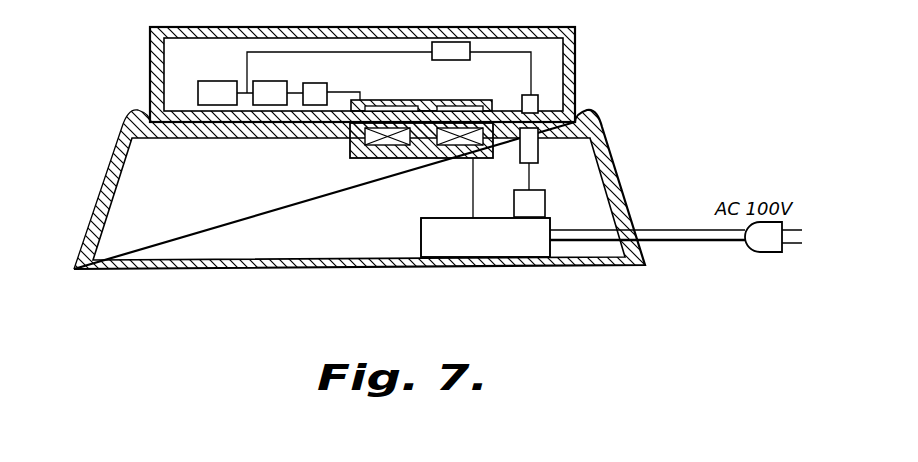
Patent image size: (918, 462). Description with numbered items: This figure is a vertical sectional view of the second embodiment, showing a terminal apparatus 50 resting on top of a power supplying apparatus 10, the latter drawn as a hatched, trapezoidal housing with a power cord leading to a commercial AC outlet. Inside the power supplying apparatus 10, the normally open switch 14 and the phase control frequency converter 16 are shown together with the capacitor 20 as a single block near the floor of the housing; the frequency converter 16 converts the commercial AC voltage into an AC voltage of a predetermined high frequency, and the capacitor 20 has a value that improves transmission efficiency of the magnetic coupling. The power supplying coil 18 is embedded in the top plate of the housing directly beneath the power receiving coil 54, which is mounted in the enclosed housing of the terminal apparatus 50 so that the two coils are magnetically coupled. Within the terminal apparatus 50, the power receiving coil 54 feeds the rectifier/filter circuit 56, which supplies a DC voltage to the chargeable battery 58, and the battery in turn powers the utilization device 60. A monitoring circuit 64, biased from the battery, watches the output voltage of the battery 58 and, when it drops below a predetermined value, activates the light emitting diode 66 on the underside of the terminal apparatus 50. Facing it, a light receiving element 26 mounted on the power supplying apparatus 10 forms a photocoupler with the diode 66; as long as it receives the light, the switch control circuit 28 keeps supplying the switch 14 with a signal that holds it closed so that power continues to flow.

The power supplying apparatus 10 is at (616, 137).
The terminal apparatus 50 is at (581, 61).
The utilization device 60 is at (218, 81).
The chargeable battery 58 is at (268, 88).
The rectifier/filter circuit 56 is at (315, 83).
The monitoring circuit 64 is at (465, 60).
The light emitting diode 66 is at (522, 97).
The power receiving coil 54 is at (422, 100).
The power supplying coil 18 is at (376, 158).
The capacitor 20 is at (423, 158).
The light receiving element 26 is at (538, 157).
The switch control circuit 28 is at (537, 199).
The normally open switch 14 is at (421, 236).
The frequency converter 16 is at (485, 237).